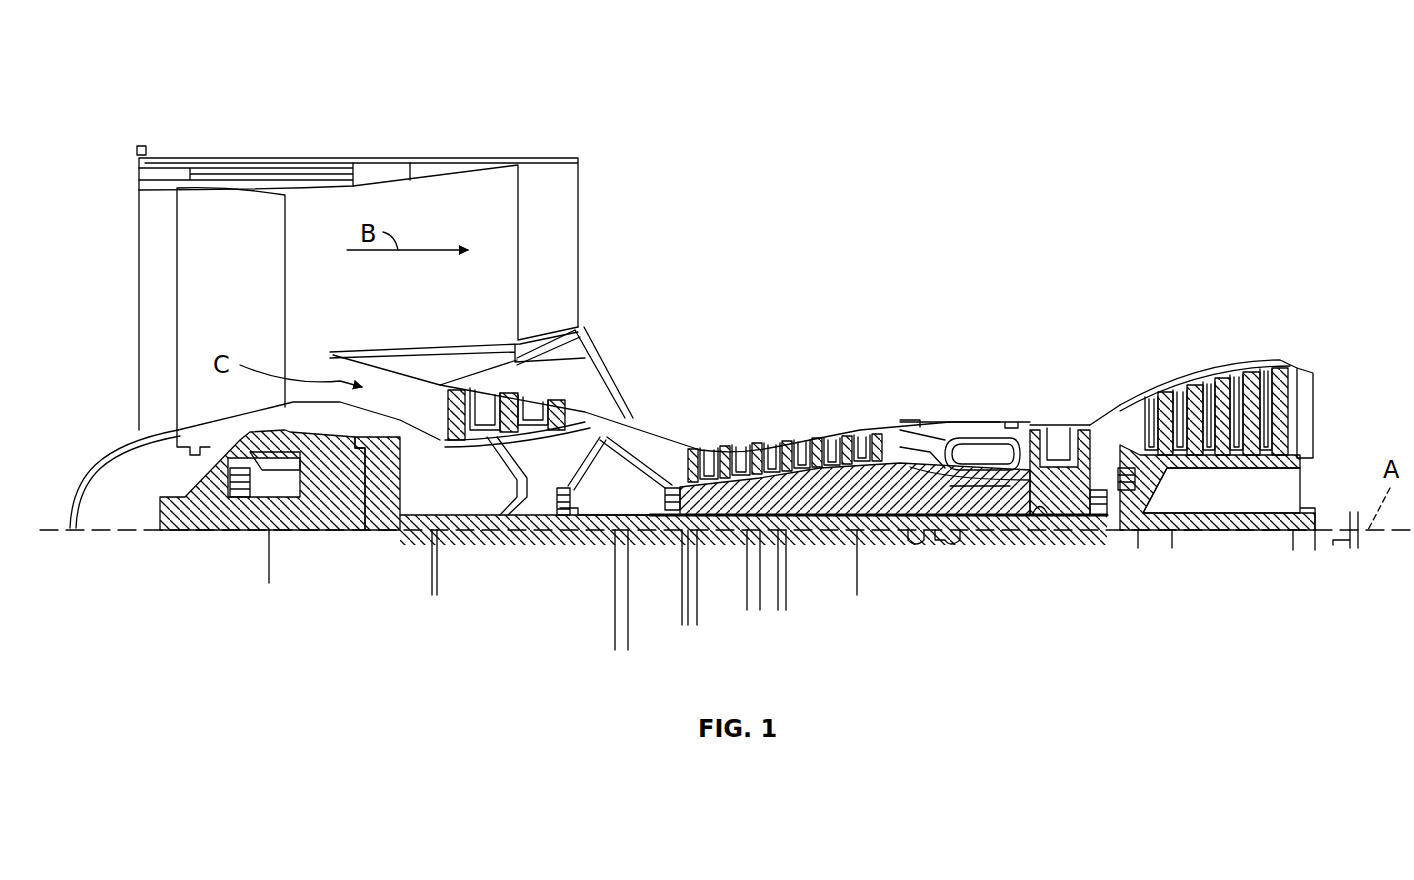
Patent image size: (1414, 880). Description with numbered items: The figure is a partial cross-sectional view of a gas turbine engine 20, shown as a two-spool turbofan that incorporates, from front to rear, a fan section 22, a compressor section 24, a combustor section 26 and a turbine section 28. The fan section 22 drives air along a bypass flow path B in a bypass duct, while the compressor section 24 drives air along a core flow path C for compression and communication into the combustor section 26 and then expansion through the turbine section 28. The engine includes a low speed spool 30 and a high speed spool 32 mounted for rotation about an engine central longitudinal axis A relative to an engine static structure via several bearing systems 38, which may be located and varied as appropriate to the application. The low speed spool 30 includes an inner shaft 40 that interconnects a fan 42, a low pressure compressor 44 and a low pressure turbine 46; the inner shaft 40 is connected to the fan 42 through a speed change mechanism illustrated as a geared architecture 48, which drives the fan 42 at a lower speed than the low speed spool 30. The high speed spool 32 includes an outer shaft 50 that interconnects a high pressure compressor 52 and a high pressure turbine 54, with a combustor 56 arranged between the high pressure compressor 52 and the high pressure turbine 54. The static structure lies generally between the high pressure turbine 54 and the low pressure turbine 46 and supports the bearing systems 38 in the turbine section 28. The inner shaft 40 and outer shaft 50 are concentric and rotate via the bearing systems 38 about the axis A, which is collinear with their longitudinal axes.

The gas turbine engine 20 is at (1240, 204).
The fan section 22 is at (331, 140).
The compressor section 24 is at (813, 409).
The combustor section 26 is at (941, 376).
The turbine section 28 is at (1143, 360).
The low speed spool 30 is at (824, 538).
The high speed spool 32 is at (860, 495).
The bearing systems 38 is at (240, 490).
The inner shaft 40 is at (645, 525).
The fan 42 is at (247, 294).
The low pressure compressor 44 is at (530, 397).
The low pressure turbine 46 is at (1225, 388).
The geared architecture 48 is at (388, 503).
The outer shaft 50 is at (1045, 505).
The high pressure compressor 52 is at (800, 440).
The high pressure turbine 54 is at (1057, 425).
The combustor 56 is at (984, 452).